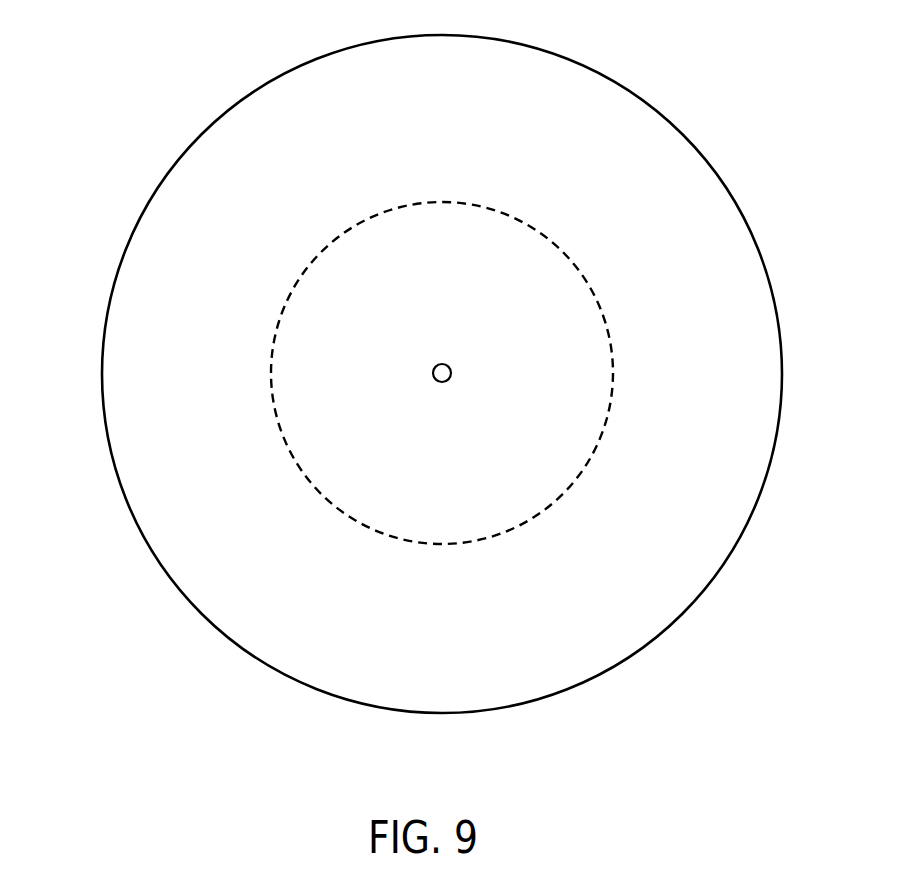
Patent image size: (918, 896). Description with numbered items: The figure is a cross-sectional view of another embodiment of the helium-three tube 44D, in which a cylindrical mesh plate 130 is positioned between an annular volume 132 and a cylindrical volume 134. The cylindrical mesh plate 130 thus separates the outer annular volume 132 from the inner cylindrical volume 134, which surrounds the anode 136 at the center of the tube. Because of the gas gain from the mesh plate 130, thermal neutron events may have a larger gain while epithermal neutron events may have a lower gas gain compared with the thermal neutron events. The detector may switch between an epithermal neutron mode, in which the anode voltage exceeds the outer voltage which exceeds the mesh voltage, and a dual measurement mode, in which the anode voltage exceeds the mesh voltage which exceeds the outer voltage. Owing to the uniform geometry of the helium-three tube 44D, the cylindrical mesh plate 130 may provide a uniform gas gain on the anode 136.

The Helium-3 tube 44D is at (183, 74).
The cylindrical mesh plate 130 is at (320, 495).
The annular volume 132 is at (642, 610).
The cylindrical volume 134 is at (545, 289).
The anode 136 is at (434, 381).